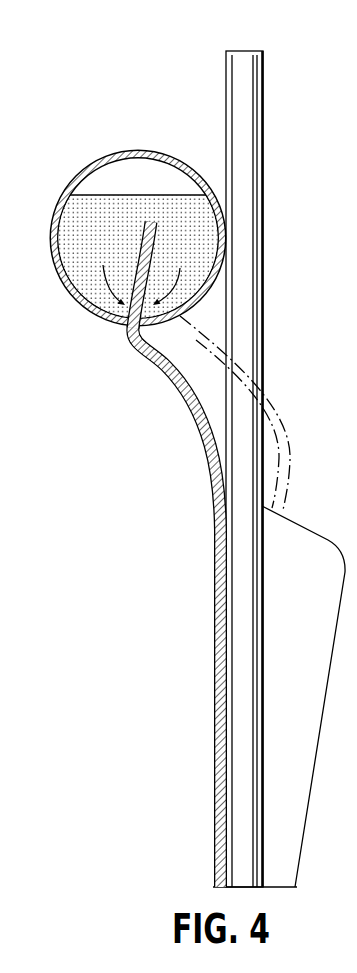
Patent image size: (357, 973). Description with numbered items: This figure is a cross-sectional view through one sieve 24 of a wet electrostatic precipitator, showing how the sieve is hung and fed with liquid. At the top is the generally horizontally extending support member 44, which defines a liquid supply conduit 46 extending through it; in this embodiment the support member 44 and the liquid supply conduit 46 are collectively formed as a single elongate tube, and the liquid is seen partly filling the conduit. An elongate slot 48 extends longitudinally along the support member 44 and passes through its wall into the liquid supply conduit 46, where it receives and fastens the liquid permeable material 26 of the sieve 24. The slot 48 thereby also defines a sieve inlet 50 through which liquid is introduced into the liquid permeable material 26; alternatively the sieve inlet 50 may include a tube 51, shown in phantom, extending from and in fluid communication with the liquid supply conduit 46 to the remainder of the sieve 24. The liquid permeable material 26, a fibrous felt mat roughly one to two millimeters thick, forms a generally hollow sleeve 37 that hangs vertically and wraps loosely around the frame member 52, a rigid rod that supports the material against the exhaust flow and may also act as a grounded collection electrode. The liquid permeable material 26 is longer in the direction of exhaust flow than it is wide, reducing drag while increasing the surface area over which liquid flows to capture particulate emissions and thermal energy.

The sieve 24 is at (167, 554).
The liquid permeable material 26 is at (220, 718).
The sleeve 37 is at (177, 554).
The support member 44 is at (98, 158).
The liquid supply conduit 46 is at (138, 245).
The elongate slot 48 is at (130, 328).
The sieve inlet 50 is at (137, 343).
The tube 51 is at (278, 406).
The frame member 52 is at (240, 51).